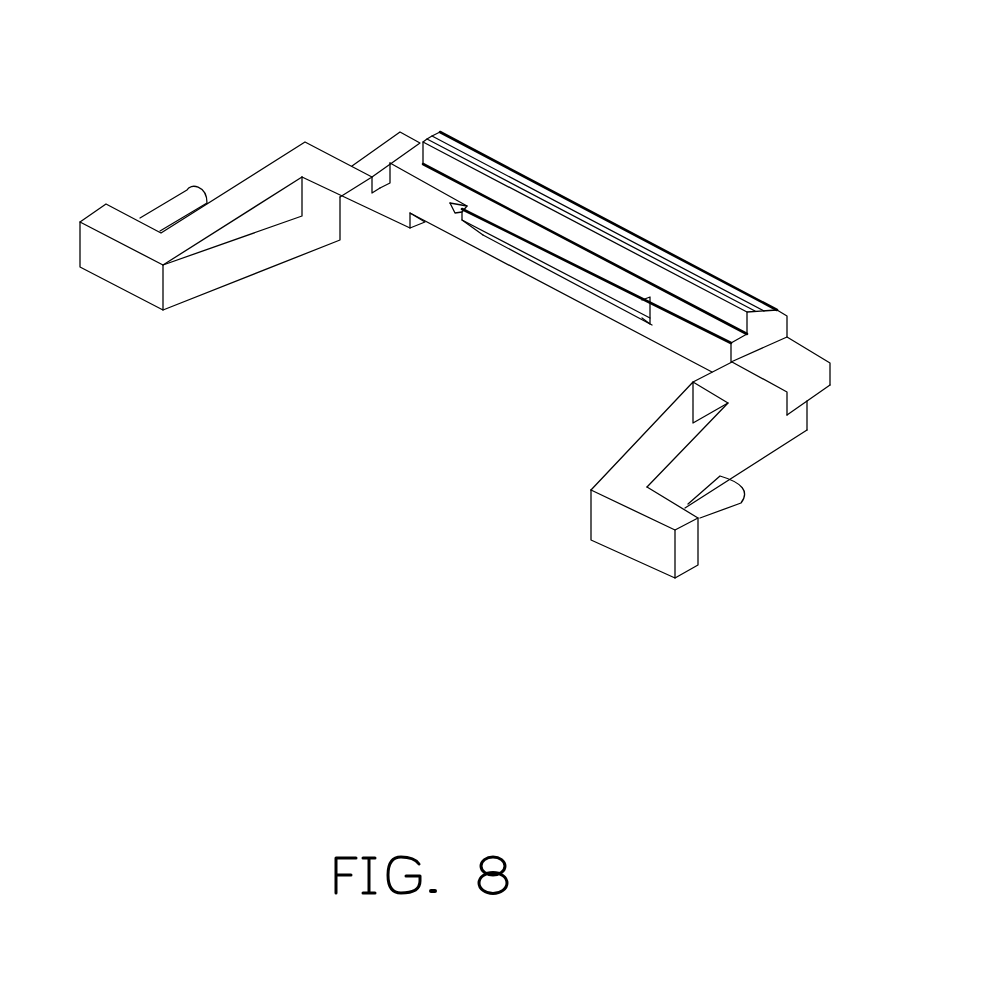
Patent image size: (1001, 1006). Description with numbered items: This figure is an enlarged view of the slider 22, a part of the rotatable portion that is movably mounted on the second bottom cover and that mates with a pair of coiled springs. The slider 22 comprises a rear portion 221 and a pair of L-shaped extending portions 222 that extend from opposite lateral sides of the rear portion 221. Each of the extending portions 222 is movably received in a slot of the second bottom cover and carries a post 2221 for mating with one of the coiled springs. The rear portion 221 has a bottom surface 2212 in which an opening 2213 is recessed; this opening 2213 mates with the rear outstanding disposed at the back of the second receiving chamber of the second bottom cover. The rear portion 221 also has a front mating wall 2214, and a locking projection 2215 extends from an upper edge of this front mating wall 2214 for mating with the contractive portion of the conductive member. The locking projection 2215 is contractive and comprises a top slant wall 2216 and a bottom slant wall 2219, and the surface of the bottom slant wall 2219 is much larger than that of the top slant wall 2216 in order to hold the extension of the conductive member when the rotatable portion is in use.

The slider 22 is at (262, 132).
The rear portion 221 is at (633, 243).
The bottom surface 2212 is at (437, 222).
The opening 2213 is at (530, 280).
The front mating wall 2214 is at (682, 330).
The locking projection 2215 is at (646, 312).
The top slant wall 2216 is at (553, 260).
The bottom slant wall 2219 is at (483, 233).
The L-shaped extending portions 222 is at (227, 253).
The post 2221 is at (176, 208).